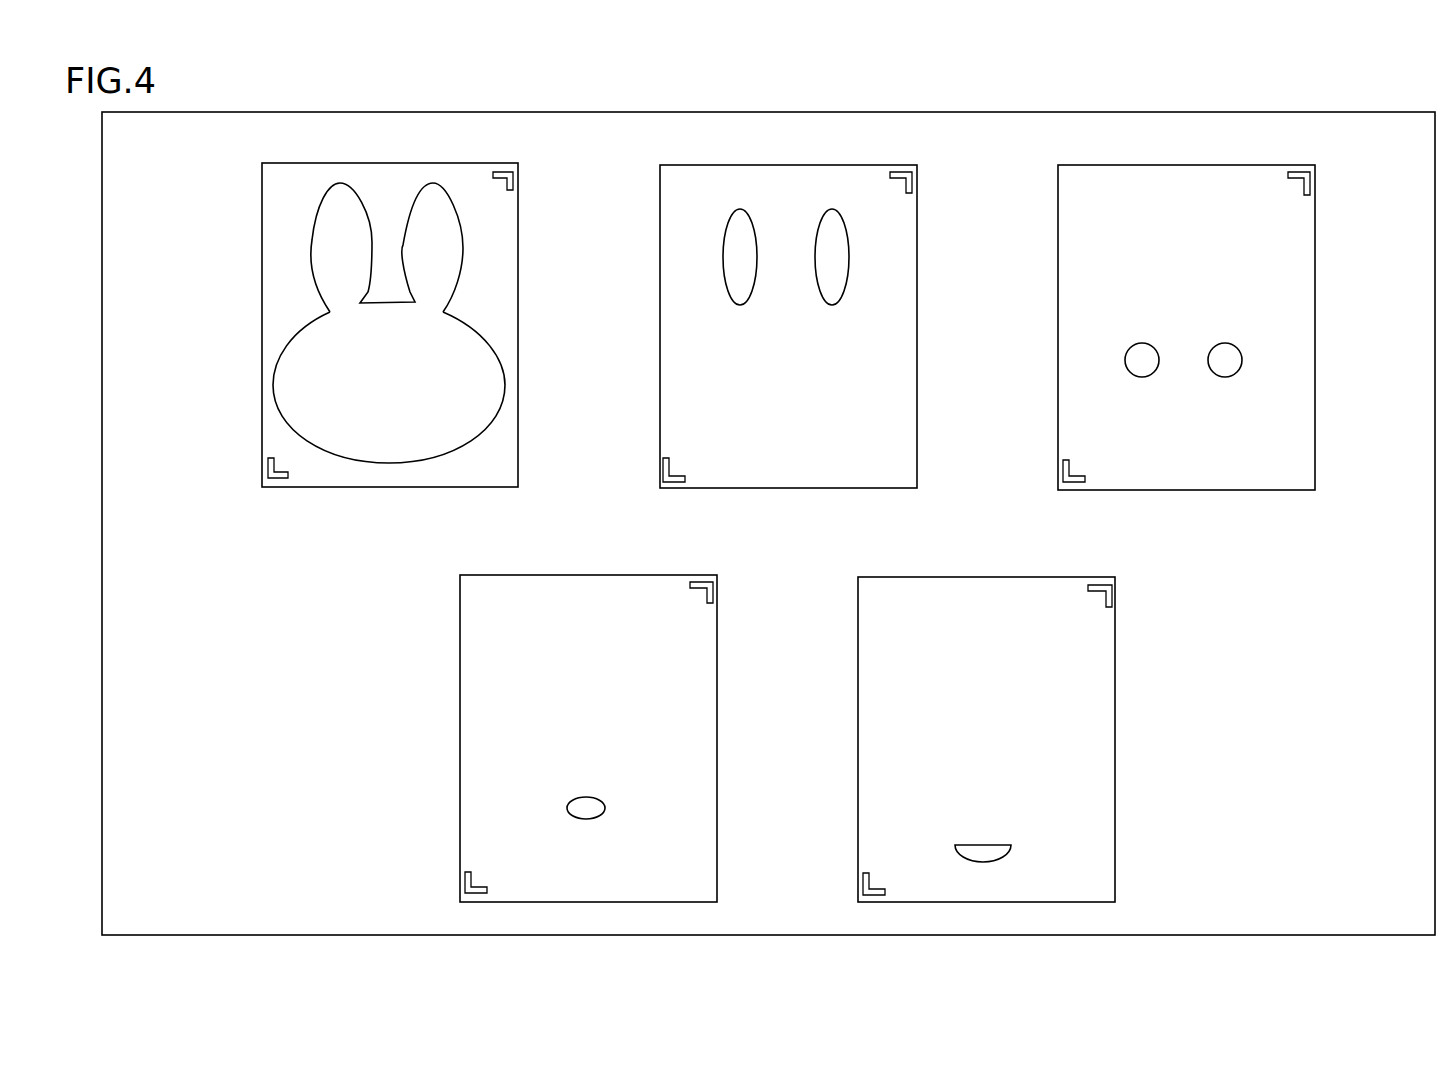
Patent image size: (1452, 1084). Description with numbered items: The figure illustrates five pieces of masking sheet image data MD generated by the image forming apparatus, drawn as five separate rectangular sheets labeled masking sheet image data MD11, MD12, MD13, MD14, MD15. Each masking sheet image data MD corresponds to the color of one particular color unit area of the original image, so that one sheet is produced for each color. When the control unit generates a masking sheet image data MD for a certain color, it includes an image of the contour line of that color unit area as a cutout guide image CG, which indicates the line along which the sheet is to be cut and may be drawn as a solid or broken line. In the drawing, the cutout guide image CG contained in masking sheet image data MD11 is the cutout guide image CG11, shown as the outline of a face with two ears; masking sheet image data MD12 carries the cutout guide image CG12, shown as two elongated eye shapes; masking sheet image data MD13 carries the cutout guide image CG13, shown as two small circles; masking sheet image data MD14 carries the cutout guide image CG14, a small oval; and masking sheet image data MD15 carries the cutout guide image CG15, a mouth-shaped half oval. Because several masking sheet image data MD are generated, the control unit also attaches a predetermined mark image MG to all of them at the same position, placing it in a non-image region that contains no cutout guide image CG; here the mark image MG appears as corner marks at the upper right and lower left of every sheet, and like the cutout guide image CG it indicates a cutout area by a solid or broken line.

The masking sheet image data MD is at (725, 516).
The masking sheet image data MD11 is at (303, 163).
The masking sheet image data MD12 is at (702, 165).
The masking sheet image data MD13 is at (1100, 165).
The masking sheet image data MD14 is at (500, 575).
The masking sheet image data MD15 is at (900, 577).
The mark image MG is at (515, 184).
The cutout guide image CG is at (784, 522).
The cutout guide image CG11 is at (285, 347).
The cutout guide image CG12 is at (722, 258).
The cutout guide image CG13 is at (1125, 362).
The cutout guide image CG14 is at (567, 806).
The cutout guide image CG15 is at (955, 845).